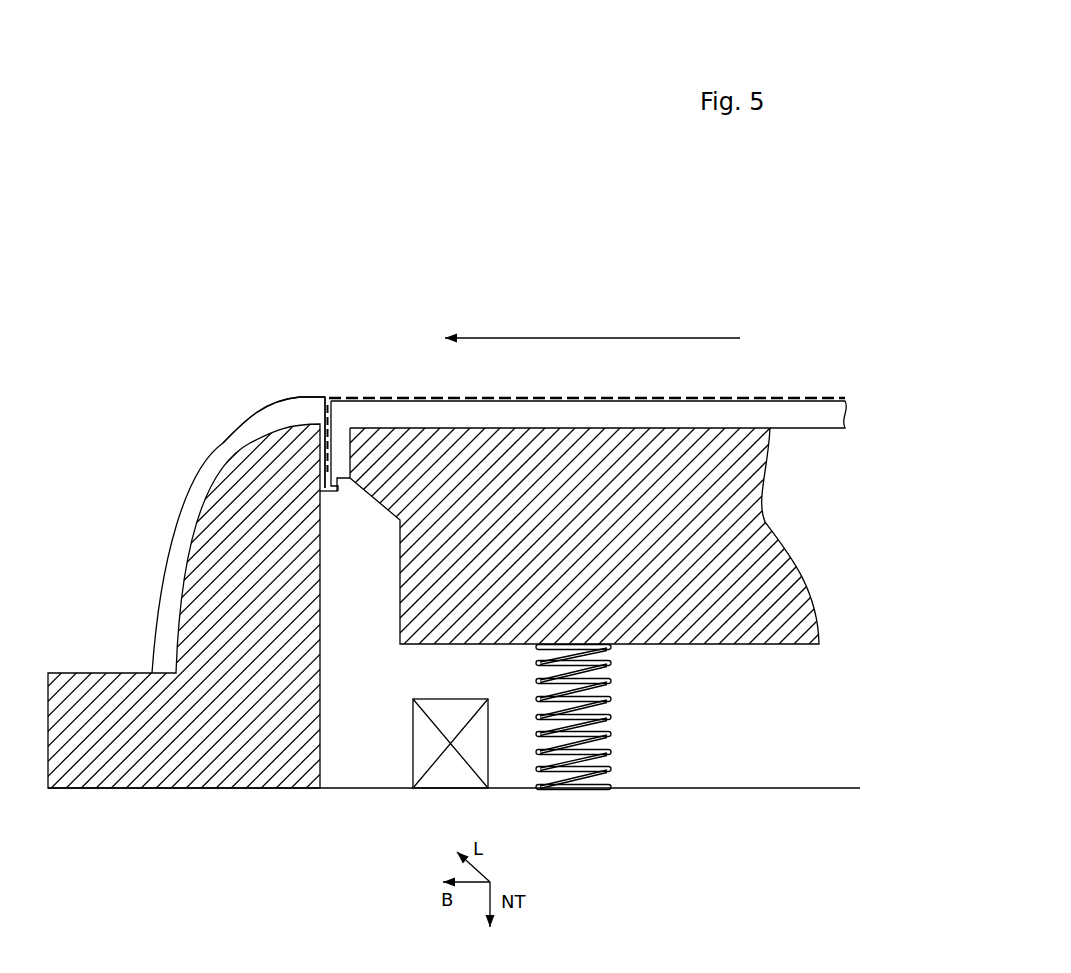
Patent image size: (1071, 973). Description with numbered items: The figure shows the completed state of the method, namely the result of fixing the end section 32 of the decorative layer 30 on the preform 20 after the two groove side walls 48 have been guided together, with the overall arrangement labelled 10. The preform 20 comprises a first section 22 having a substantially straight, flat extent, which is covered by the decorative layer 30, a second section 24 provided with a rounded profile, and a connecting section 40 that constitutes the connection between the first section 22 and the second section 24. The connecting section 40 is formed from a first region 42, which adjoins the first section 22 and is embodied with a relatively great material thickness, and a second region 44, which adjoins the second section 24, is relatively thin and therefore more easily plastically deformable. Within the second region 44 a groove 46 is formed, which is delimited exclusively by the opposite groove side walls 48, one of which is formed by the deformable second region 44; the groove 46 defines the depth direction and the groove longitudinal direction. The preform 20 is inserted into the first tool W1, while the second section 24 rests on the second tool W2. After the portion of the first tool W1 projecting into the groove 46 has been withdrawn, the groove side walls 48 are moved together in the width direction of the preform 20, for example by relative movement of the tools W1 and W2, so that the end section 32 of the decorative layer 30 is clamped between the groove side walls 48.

The tire building apparatus 10 is at (363, 100).
The preform 20 is at (208, 285).
The first section 22 is at (833, 418).
The second section 24 is at (172, 567).
The decorative layer 30 is at (788, 398).
The end section 32 is at (316, 400).
The connecting section 40 is at (303, 380).
The first region 42 is at (340, 467).
The second region 44 is at (337, 492).
The groove 46 is at (328, 484).
The groove side walls 48 is at (325, 440).
The first tool W1 is at (797, 633).
The second tool W2 is at (285, 730).